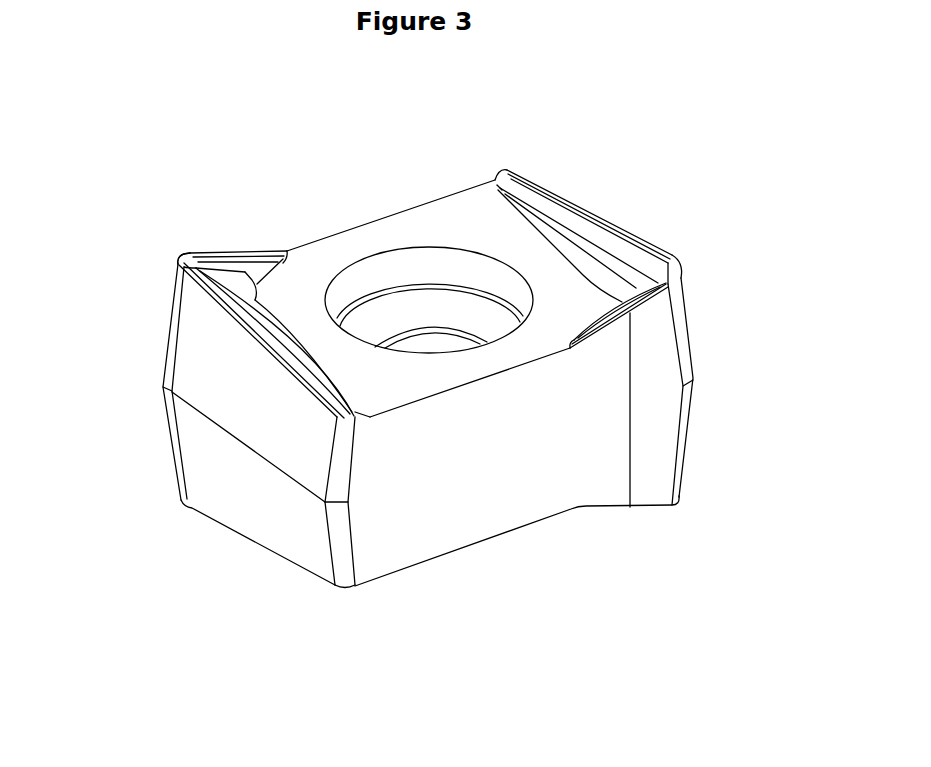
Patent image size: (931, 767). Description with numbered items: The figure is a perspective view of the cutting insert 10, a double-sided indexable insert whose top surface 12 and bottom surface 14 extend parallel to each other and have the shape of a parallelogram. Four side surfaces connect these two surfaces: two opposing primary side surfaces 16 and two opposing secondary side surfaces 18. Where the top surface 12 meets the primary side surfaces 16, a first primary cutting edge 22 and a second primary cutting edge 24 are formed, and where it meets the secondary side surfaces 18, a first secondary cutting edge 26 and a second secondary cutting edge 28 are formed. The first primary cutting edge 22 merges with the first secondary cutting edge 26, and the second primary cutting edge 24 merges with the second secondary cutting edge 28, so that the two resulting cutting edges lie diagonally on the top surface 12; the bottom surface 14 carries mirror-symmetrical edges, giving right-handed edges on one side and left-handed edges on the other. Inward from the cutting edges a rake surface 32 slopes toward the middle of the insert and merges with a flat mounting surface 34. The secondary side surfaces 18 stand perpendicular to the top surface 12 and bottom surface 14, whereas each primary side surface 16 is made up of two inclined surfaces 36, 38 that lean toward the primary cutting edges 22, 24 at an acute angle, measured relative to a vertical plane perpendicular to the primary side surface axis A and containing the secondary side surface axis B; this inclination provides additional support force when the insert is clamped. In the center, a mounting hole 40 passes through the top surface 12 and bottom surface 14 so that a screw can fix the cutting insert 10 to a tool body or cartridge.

The cutting insert 10 is at (519, 127).
The top surface 12 is at (335, 226).
The bottom surface 14 is at (411, 587).
The primary side surface 16 is at (140, 392).
The secondary side surface 18 is at (556, 468).
The first primary cutting edge 22 is at (227, 332).
The second primary cutting edge 24 is at (600, 210).
The first secondary cutting edge 26 is at (237, 246).
The second secondary cutting edge 28 is at (643, 303).
The rake surface 32 is at (177, 258).
The mounting surface 34 is at (462, 205).
The inclined surface 36 is at (215, 358).
The inclined surface 38 is at (210, 458).
The mounting hole 40 is at (415, 295).
The primary side surface axis A is at (135, 523).
The secondary side surface axis B is at (531, 578).